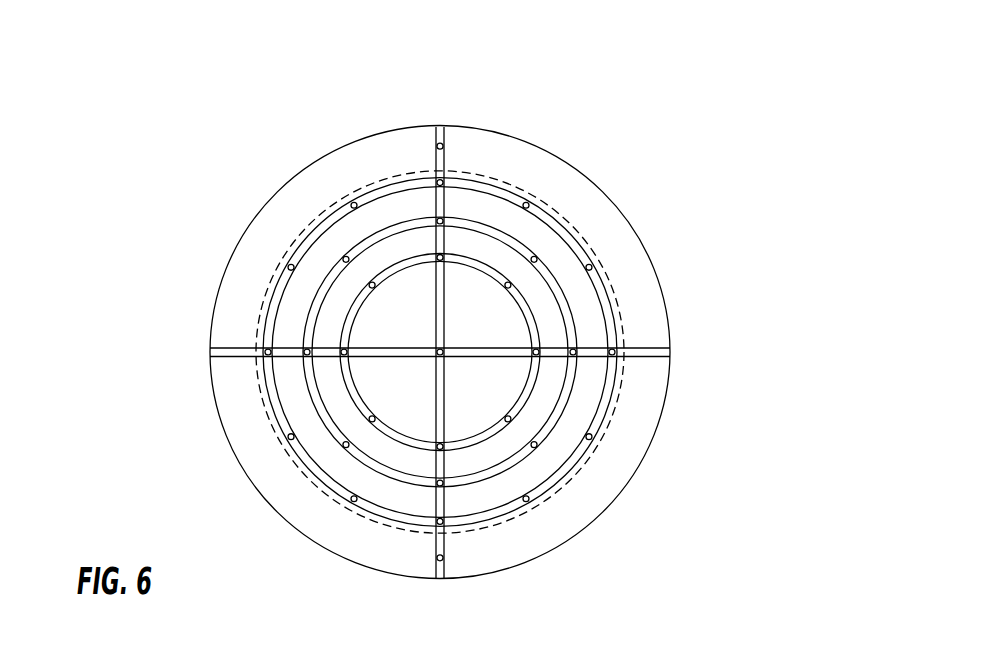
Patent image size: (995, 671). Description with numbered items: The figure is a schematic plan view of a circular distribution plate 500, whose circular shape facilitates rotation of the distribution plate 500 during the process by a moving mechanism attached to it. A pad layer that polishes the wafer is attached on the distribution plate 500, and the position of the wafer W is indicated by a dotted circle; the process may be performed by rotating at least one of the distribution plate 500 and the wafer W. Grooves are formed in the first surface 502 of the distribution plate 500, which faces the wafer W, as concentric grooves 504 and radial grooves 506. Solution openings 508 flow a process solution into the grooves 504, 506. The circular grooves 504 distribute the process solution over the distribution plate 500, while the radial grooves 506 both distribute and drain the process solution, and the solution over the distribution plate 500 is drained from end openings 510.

The distribution plate 500 is at (603, 192).
The first surface 502 is at (647, 321).
The concentric grooves 504 is at (566, 402).
The radial grooves 506 is at (445, 545).
The solution openings 508 is at (354, 206).
The end openings 510 is at (504, 396).
The wafer W is at (537, 197).